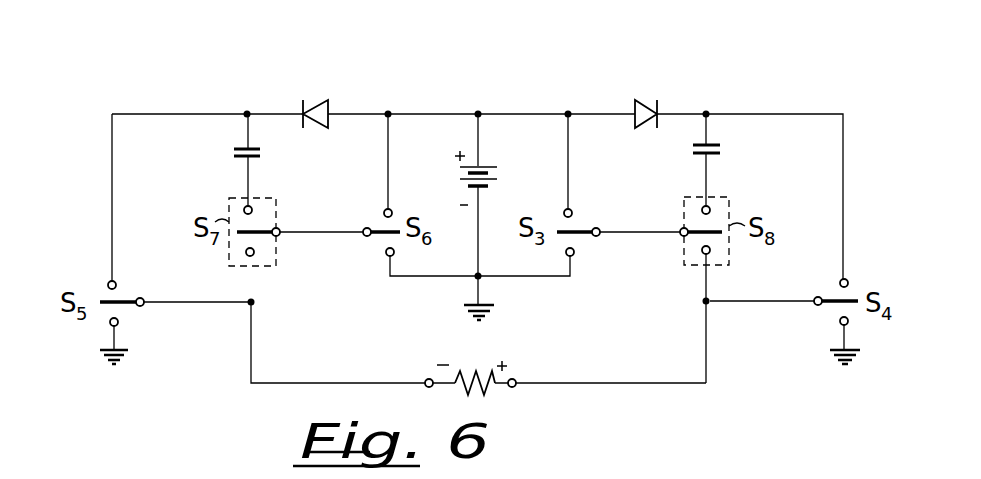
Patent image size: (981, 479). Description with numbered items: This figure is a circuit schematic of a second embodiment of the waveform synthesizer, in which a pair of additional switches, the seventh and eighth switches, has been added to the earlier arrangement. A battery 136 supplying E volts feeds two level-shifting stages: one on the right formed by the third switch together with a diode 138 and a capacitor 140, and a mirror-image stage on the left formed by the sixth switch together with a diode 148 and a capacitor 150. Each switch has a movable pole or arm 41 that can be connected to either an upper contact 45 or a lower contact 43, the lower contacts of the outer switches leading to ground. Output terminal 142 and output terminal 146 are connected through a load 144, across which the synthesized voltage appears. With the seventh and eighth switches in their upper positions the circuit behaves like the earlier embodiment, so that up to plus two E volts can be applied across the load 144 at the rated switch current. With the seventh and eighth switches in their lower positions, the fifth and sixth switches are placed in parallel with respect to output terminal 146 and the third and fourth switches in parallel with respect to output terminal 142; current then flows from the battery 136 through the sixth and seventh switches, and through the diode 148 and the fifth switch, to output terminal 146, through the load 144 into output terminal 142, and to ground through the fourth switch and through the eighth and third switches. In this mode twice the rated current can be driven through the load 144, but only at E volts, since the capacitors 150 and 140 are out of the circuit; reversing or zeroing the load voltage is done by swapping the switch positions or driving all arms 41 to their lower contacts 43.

The pole 41 is at (816, 298).
The lower contact 43 is at (839, 322).
The upper contact 45 is at (858, 271).
The battery 136 is at (479, 166).
The diode 138 is at (645, 100).
The capacitor 140 is at (720, 151).
The output terminal 142 is at (516, 380).
The load 144 is at (490, 393).
The output terminal 146 is at (427, 379).
The diode 148 is at (318, 100).
The capacitor 150 is at (258, 156).